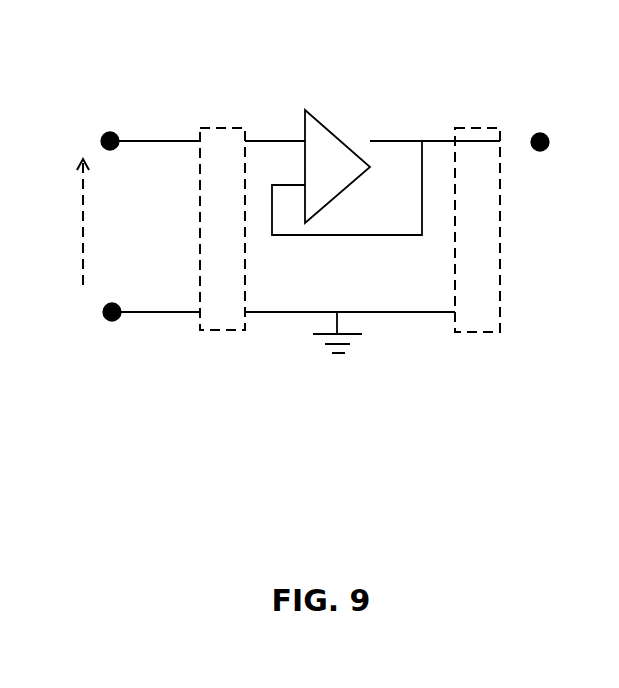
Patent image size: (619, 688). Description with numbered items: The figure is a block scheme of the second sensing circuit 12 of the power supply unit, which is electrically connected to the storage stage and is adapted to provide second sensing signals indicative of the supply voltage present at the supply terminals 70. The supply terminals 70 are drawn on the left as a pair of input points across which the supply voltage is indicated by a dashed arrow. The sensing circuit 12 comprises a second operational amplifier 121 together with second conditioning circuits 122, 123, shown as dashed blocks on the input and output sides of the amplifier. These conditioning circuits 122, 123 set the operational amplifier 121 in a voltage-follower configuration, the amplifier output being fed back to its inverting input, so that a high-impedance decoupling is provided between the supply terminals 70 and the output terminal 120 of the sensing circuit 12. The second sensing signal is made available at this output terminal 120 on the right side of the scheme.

The second sensing circuit 12 is at (340, 424).
The second operational amplifier 121 is at (302, 102).
The second conditioning circuit 122 is at (196, 232).
The second conditioning circuit 123 is at (453, 247).
The supply terminals 70 is at (115, 334).
The output terminal 120 is at (552, 173).